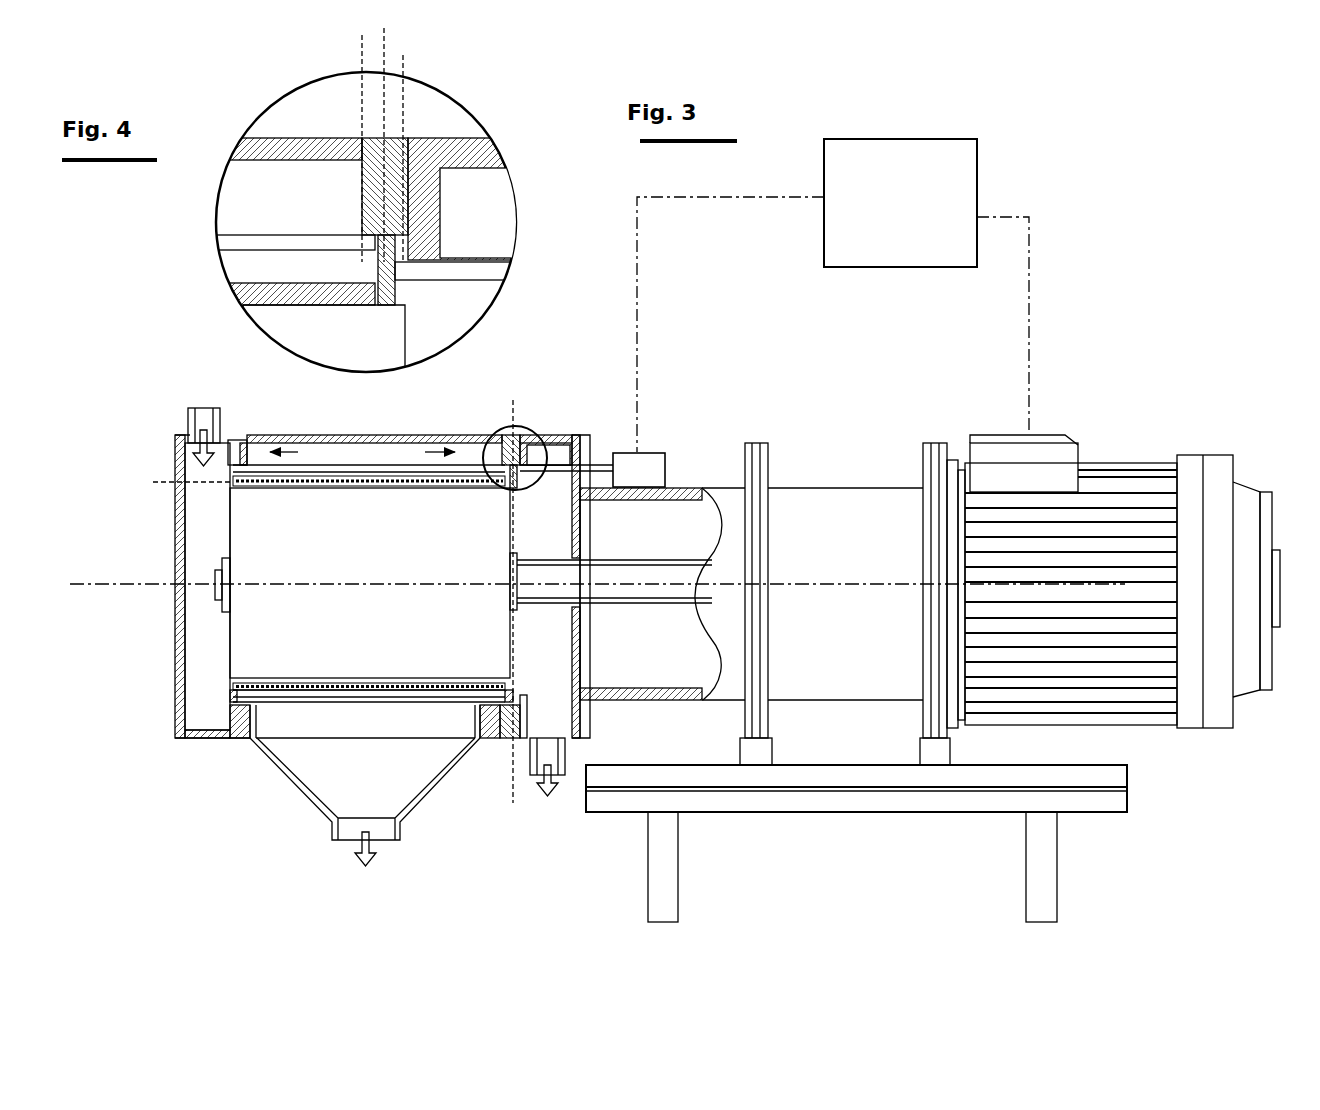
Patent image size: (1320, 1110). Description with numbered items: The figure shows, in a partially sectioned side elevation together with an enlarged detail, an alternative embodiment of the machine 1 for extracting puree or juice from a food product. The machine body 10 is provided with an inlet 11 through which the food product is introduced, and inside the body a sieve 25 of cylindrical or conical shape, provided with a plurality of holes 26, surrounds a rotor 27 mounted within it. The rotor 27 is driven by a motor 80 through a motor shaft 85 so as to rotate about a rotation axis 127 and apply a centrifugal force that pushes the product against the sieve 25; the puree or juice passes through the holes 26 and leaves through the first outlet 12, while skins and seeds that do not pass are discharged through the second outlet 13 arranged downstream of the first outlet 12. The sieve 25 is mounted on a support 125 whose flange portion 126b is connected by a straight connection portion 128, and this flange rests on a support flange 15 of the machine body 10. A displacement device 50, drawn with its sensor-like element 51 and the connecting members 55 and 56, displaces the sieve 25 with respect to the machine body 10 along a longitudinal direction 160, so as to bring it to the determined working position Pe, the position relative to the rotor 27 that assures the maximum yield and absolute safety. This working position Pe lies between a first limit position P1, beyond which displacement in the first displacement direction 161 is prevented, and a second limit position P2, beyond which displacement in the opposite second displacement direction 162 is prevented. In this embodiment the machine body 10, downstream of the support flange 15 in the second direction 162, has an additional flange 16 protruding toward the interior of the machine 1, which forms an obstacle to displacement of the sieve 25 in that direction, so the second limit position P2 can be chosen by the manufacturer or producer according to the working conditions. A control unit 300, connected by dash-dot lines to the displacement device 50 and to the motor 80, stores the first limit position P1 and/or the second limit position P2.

In FIG. 3, the machine 1 is at (1163, 214).
In FIG. 3, the control unit 300 is at (985, 185).
In FIG. 3, the motor 80 is at (1150, 442).
In FIG. 3, the motor shaft 85 is at (612, 593).
In FIG. 3, the displacement device 50 is at (672, 430).
In FIG. 3, the sensor 51 is at (666, 462).
In FIG. 3, the housing end wall 55 is at (600, 452).
In FIG. 4, the housing end wall 55 is at (490, 270).
In FIG. 4, the gap 56 is at (410, 272).
In FIG. 3, the machine body 10 is at (360, 440).
In FIG. 4, the machine body 10 is at (270, 135).
In FIG. 3, the inlet 11 is at (200, 402).
In FIG. 3, the first outlet 12 is at (345, 850).
In FIG. 3, the second outlet 13 is at (545, 810).
In FIG. 3, the support flange 15 is at (505, 742).
In FIG. 4, the support flange 15 is at (352, 185).
In FIG. 4, the additional flange 16 is at (447, 228).
In FIG. 3, the sieve 25 is at (230, 642).
In FIG. 4, the sieve 25 is at (240, 290).
In FIG. 3, the holes 26 is at (420, 692).
In FIG. 3, the rotor 27 is at (222, 528).
In FIG. 4, the rotor 27 is at (275, 322).
In FIG. 3, the support 125 is at (230, 697).
In FIG. 4, the second flange portion 126b is at (405, 295).
In FIG. 3, the rotation axis 127 is at (108, 582).
In FIG. 3, the straight connection portion 128 is at (405, 462).
In FIG. 4, the straight connection portion 128 is at (243, 242).
In FIG. 3, the longitudinal direction 160 is at (163, 482).
In FIG. 3, the first displacement direction 161 is at (290, 440).
In FIG. 3, the second displacement direction 162 is at (445, 440).
In FIG. 3, the working position Pe is at (515, 588).
In FIG. 4, the working position Pe is at (393, 132).
In FIG. 4, the first limit position P1 is at (360, 140).
In FIG. 4, the second limit position P2 is at (415, 150).